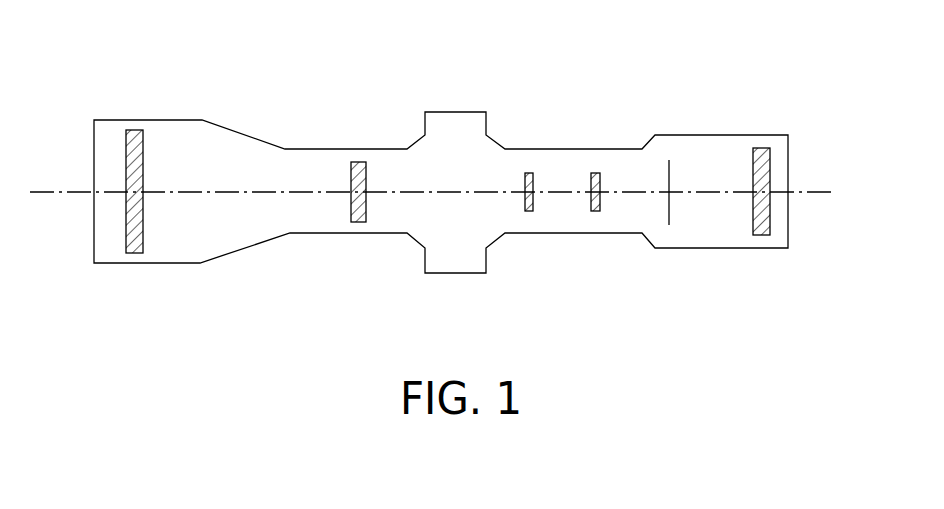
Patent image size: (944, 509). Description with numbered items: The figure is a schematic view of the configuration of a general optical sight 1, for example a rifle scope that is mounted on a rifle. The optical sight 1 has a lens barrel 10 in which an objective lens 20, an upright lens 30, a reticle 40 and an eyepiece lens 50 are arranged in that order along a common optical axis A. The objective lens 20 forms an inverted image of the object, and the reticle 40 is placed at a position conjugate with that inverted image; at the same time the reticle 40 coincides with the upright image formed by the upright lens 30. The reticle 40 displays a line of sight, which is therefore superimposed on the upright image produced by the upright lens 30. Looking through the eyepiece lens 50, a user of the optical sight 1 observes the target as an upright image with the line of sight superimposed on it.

The optical sight 1 is at (467, 12).
The optical axis A is at (210, 190).
The lens barrel 10 is at (305, 148).
The objective lens 20 is at (119, 280).
The upright lens 30 is at (515, 255).
The reticle 40 is at (669, 225).
The eyepiece lens 50 is at (763, 235).